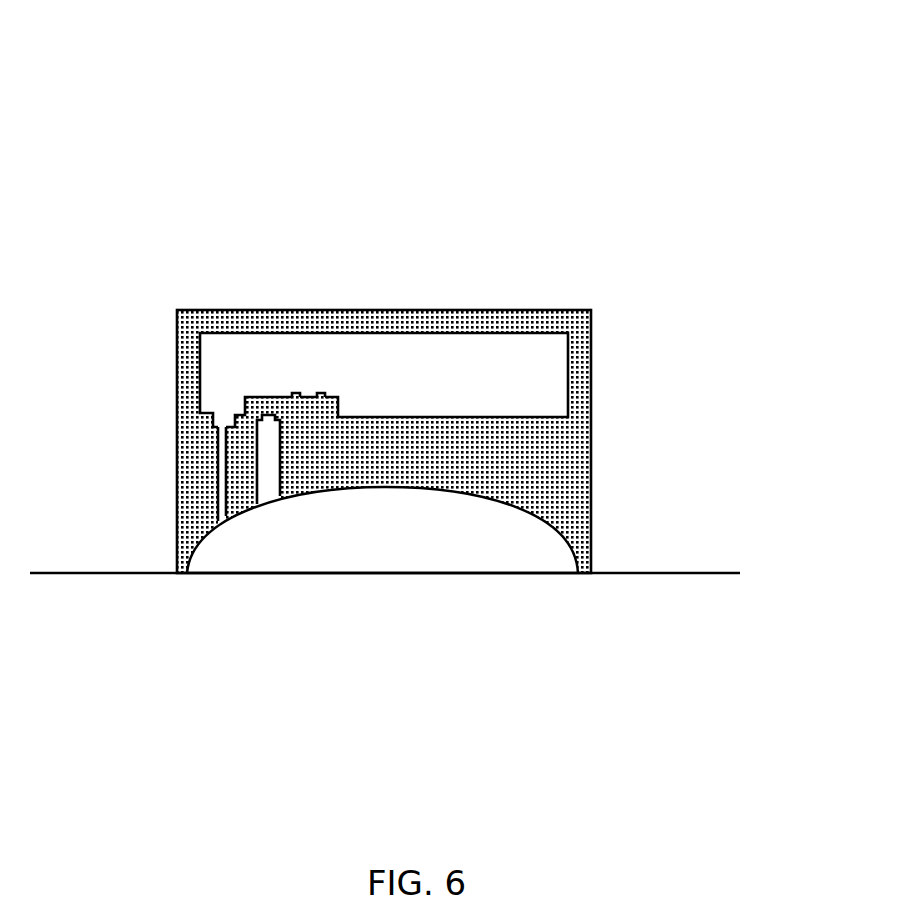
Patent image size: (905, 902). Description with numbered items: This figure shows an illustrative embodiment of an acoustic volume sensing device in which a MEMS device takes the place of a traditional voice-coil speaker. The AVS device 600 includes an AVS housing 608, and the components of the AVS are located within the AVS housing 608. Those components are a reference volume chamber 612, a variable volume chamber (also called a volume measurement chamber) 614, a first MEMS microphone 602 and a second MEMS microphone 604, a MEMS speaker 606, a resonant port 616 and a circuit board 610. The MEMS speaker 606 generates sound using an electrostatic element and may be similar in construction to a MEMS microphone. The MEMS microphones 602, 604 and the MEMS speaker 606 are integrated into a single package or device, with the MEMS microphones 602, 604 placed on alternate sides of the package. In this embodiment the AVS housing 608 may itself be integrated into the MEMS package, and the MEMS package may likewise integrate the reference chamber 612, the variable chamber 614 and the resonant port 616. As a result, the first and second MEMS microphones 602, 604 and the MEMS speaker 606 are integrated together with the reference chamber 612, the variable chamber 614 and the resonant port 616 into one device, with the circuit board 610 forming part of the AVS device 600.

The AVS device 600 is at (640, 40).
The MEMS microphone 602 is at (297, 393).
The MEMS microphone 604 is at (268, 420).
The MEMS speaker 606 is at (322, 393).
The AVS housing 608 is at (557, 530).
The circuit board 610 is at (545, 417).
The reference volume chamber 612 is at (480, 370).
The variable volume chamber 614 is at (508, 557).
The resonant port 616 is at (223, 515).